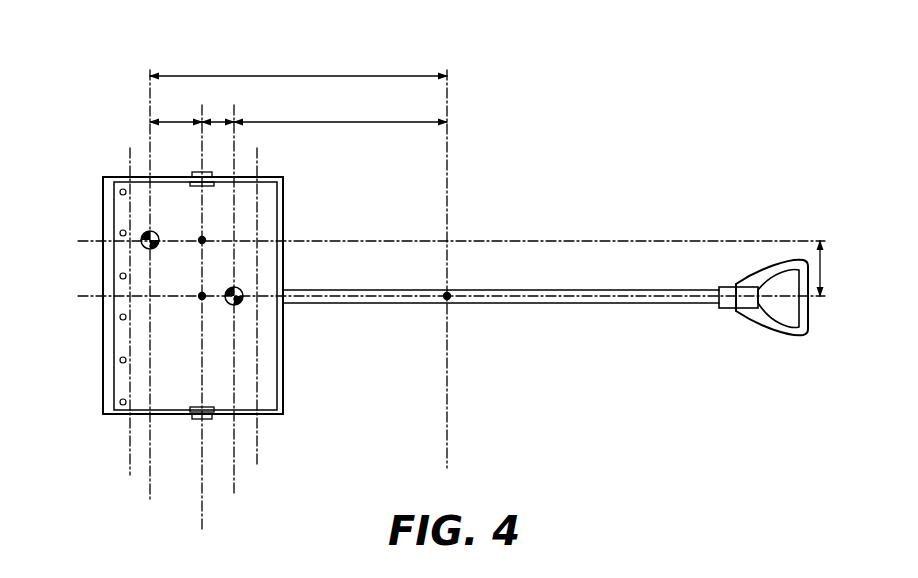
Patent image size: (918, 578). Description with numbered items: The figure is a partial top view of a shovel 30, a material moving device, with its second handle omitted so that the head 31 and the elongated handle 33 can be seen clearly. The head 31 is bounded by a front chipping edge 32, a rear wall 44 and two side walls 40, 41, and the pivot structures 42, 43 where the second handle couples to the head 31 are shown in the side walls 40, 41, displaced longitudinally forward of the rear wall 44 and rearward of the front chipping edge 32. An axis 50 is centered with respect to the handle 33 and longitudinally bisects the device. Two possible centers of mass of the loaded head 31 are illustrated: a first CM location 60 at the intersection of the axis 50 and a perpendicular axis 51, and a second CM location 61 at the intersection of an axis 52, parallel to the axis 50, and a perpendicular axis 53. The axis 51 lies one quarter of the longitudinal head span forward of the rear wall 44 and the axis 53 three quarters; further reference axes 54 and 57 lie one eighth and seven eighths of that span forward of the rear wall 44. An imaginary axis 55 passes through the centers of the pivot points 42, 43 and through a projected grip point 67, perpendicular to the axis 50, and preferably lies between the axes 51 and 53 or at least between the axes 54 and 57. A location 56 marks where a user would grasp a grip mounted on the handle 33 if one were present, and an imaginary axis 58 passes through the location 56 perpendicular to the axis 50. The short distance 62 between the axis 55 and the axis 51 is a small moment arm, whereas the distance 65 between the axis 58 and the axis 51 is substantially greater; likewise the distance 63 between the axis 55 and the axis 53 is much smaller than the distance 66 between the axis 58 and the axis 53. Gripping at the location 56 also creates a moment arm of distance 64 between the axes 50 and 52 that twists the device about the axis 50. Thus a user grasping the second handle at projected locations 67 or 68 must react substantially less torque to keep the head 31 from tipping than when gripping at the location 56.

The shovel 30 is at (106, 66).
The head 31 is at (138, 375).
The front chipping edge 32 is at (103, 350).
The handle 33 is at (600, 304).
The side wall 40 is at (120, 415).
The side wall 41 is at (122, 176).
The pivot structure 42 is at (197, 420).
The pivot structure 43 is at (196, 172).
The rear wall 44 is at (285, 383).
The axis 50 is at (92, 296).
The axis 51 is at (234, 490).
The axis 52 is at (92, 241).
The axis 53 is at (150, 492).
The axis 54 is at (257, 458).
The imaginary axis 55 is at (202, 521).
The location 56 is at (448, 294).
The axis 57 is at (130, 470).
The imaginary axis 58 is at (448, 394).
The first CM location 60 is at (236, 294).
The second CM location 61 is at (148, 238).
The distance 62 is at (218, 122).
The distance 63 is at (170, 122).
The distance 64 is at (823, 268).
The distance 65 is at (338, 122).
The distance 66 is at (290, 76).
The projected point 67 is at (204, 298).
The projected location 68 is at (204, 238).